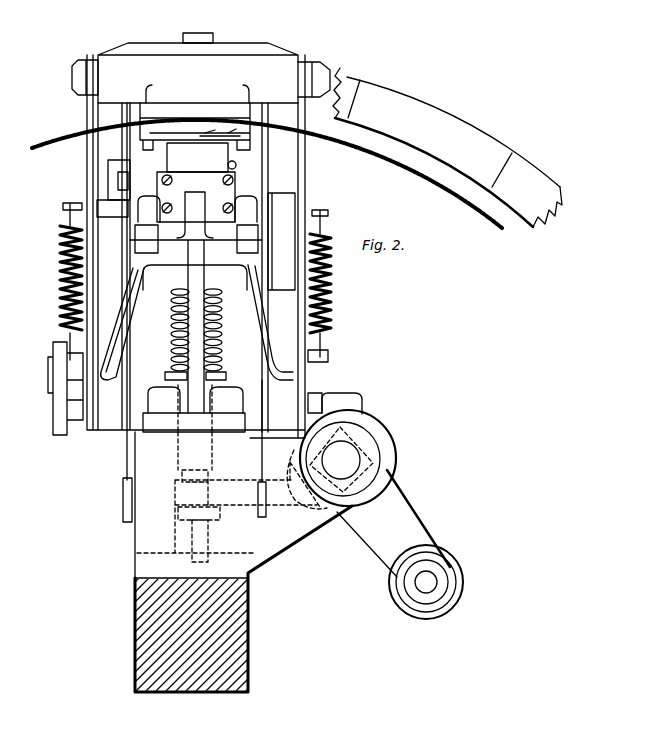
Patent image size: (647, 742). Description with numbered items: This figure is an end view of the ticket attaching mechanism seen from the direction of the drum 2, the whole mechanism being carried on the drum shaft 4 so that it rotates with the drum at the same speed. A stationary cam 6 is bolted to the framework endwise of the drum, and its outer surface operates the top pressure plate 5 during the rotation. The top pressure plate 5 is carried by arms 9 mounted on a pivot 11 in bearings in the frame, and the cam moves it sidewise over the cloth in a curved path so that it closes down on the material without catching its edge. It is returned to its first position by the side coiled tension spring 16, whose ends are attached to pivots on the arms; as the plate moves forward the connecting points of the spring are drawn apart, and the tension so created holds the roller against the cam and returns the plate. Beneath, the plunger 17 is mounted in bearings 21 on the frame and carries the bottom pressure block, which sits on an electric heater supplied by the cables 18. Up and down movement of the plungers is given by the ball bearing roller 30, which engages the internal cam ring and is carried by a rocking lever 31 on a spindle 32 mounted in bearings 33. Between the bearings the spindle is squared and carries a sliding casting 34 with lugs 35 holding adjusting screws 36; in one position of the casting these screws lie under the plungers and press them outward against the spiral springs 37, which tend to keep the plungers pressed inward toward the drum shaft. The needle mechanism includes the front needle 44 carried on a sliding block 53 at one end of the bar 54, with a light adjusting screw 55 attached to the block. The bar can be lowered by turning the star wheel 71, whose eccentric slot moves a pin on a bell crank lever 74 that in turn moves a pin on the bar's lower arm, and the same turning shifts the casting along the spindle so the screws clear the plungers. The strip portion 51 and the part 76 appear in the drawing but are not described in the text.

The drum 2 is at (345, 150).
The drum shaft 4 is at (252, 585).
The top pressure plate 5 is at (195, 117).
The stationary cam 6 is at (345, 82).
The arms 9 is at (98, 75).
The pivot 11 is at (316, 393).
The side coiled tension spring 16 is at (60, 253).
The plunger 17 is at (212, 330).
The cables 18 is at (196, 198).
The bearings 21 is at (196, 326).
The ball bearing roller 30 is at (436, 554).
The rocking lever 31 is at (396, 488).
The spindle 32 is at (341, 460).
The bearings 33 is at (341, 459).
The sliding casting 34 is at (258, 512).
The lugs 35 is at (182, 473).
The adjusting screws 36 is at (178, 533).
The spiral springs 37 is at (210, 316).
The front needle 44 is at (215, 136).
The strip section 51 is at (448, 152).
The front needle block 53 is at (182, 312).
The bar 54 is at (108, 180).
The adjusting screw 55 is at (112, 208).
The star wheel 71 is at (53, 328).
The bell crank lever 74 is at (118, 272).
The hub 76 is at (352, 396).